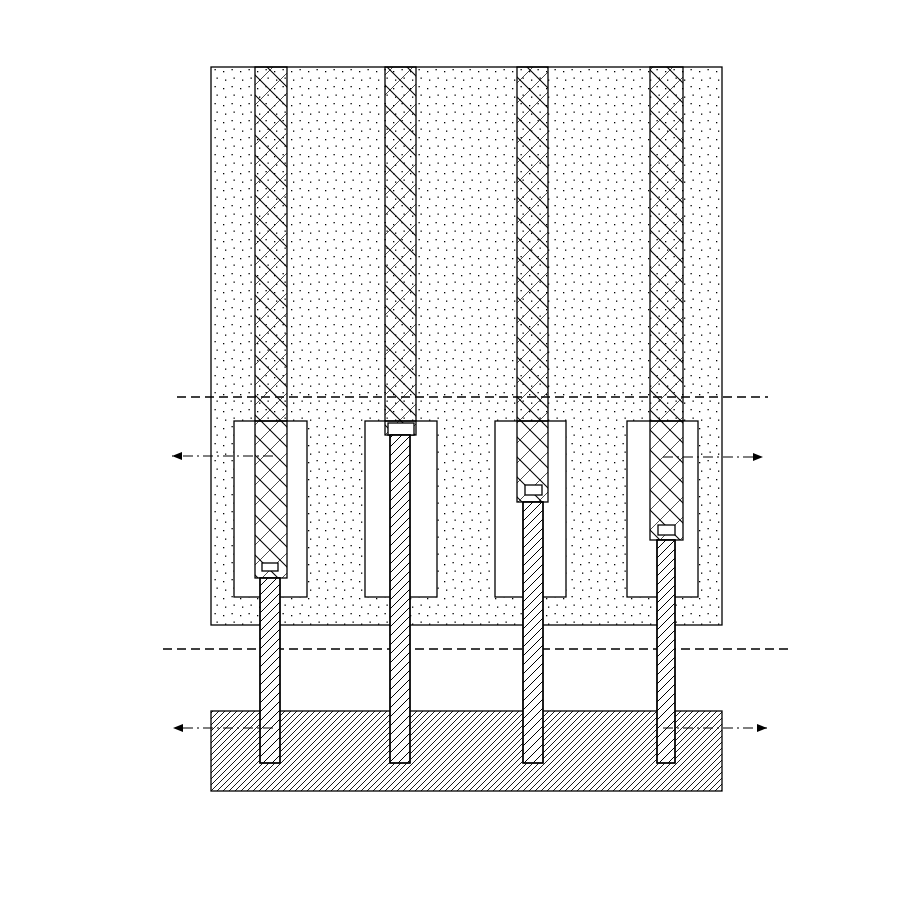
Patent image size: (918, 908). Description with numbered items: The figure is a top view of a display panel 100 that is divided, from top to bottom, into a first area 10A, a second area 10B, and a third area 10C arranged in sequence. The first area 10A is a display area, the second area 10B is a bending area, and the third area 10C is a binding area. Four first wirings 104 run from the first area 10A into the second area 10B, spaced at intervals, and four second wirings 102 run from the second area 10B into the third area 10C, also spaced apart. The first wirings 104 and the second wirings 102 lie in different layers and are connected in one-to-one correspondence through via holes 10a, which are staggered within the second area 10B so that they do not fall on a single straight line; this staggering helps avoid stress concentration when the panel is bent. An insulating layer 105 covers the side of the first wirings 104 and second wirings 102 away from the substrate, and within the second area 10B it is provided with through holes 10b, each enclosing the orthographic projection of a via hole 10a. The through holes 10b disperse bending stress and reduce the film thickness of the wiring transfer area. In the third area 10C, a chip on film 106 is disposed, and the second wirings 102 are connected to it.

The display panel 100 is at (108, 43).
The first area 10A is at (211, 194).
The second area 10B is at (432, 535).
The third area 10C is at (435, 745).
The insulating layer 105 is at (700, 297).
The first wirings 104 is at (256, 500).
The second wirings 102 is at (660, 577).
The chip on film 106 is at (722, 742).
The via holes 10a is at (676, 529).
The through holes 10b is at (243, 523).